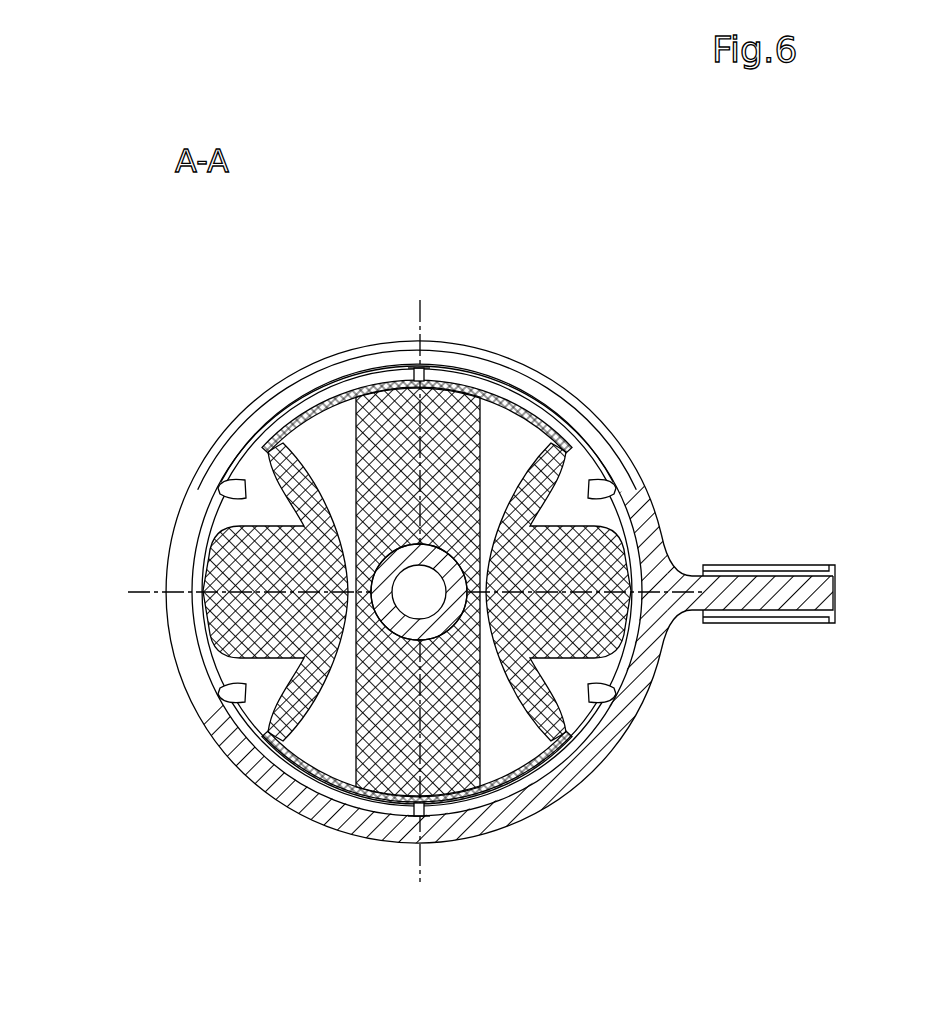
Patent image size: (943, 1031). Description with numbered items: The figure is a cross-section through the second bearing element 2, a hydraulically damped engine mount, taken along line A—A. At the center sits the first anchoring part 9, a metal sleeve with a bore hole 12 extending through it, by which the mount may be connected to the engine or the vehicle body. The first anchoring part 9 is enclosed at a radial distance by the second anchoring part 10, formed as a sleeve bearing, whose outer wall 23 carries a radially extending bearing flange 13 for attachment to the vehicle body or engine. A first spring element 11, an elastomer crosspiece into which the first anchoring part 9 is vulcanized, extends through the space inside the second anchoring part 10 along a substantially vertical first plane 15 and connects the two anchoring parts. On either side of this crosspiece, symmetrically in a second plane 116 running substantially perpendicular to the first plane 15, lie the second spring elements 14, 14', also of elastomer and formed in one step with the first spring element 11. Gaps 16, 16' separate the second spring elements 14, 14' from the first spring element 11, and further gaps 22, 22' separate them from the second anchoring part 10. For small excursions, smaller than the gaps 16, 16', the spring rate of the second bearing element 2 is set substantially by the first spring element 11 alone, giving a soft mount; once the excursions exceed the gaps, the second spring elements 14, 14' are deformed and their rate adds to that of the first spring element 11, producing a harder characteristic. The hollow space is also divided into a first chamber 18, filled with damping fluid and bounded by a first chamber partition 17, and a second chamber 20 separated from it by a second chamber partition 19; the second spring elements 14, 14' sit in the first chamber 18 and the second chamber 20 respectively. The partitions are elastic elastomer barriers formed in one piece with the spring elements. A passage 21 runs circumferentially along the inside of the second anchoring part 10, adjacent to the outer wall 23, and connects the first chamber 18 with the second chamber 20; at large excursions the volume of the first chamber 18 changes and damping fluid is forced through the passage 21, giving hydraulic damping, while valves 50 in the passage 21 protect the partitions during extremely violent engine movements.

The second bearing element 2 is at (454, 620).
The first anchoring part 9 is at (447, 547).
The second anchoring part 10 is at (540, 797).
The first spring element 11 is at (412, 603).
The bore hole 12 is at (395, 640).
The bearing flange 13 is at (780, 594).
The second spring element 14 is at (662, 608).
The second spring element 14' is at (174, 697).
The first plane 15 is at (425, 336).
The gap 16 is at (558, 523).
The gap 16' is at (276, 508).
The first chamber partition 17 is at (570, 473).
The first chamber 18 is at (580, 677).
The second chamber partition 19 is at (240, 762).
The second chamber 20 is at (255, 510).
The passage 21 is at (370, 380).
The gap 22 is at (744, 528).
The gap 22' is at (371, 528).
The outer wall 23 is at (658, 630).
The valve 50 is at (415, 370).
The second plane 116 is at (173, 593).